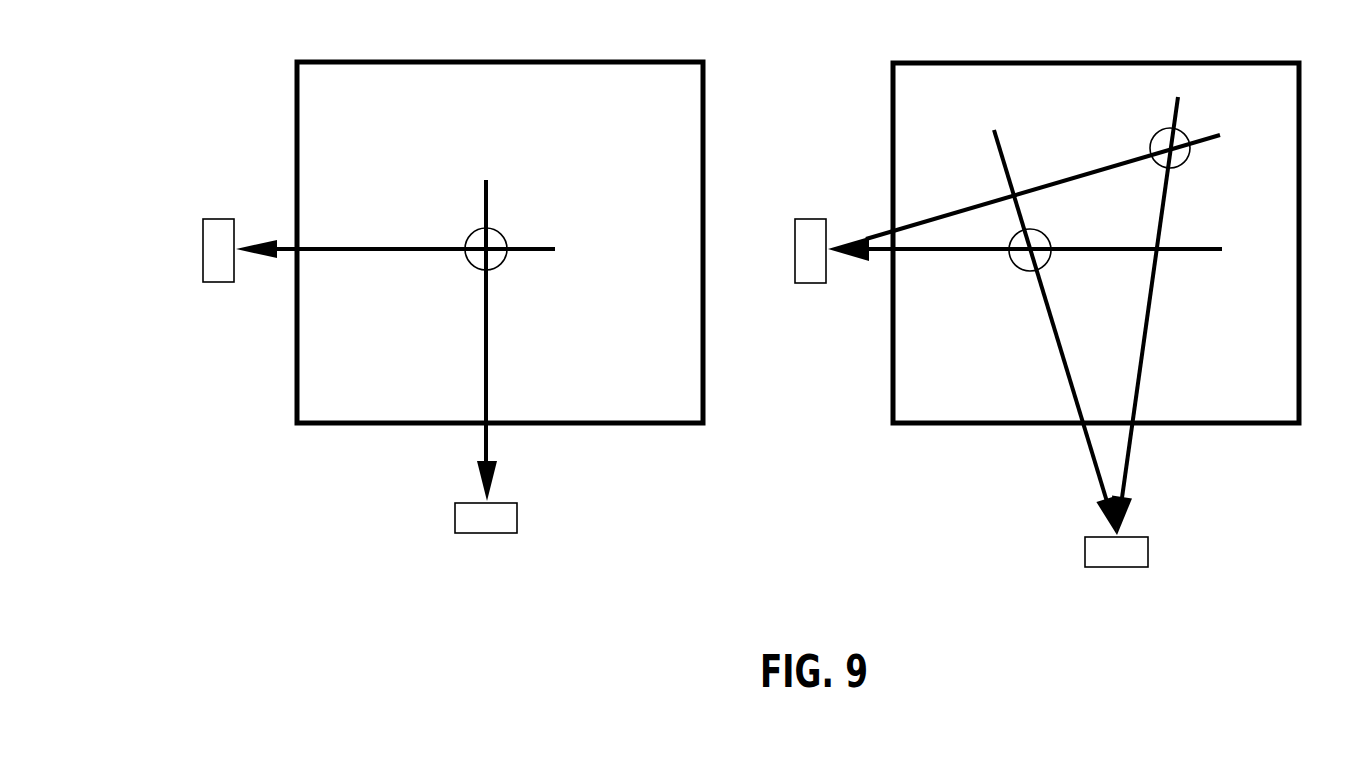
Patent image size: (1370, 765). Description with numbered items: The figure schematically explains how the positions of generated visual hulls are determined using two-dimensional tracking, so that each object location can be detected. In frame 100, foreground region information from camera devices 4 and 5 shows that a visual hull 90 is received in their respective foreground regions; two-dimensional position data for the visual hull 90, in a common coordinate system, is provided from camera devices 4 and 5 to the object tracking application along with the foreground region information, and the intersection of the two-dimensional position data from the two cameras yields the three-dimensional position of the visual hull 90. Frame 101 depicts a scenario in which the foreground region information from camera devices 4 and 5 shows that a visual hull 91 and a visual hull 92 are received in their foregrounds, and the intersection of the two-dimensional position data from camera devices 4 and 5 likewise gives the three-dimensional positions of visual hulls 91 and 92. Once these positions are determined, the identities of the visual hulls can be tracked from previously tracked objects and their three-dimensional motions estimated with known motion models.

The frame 100 is at (628, 53).
The frame 101 is at (1225, 53).
The camera device 4 is at (217, 218).
The camera device 5 is at (499, 501).
The visual hull 90 is at (497, 223).
The visual hull 91 is at (1037, 229).
The visual hull 92 is at (1190, 163).